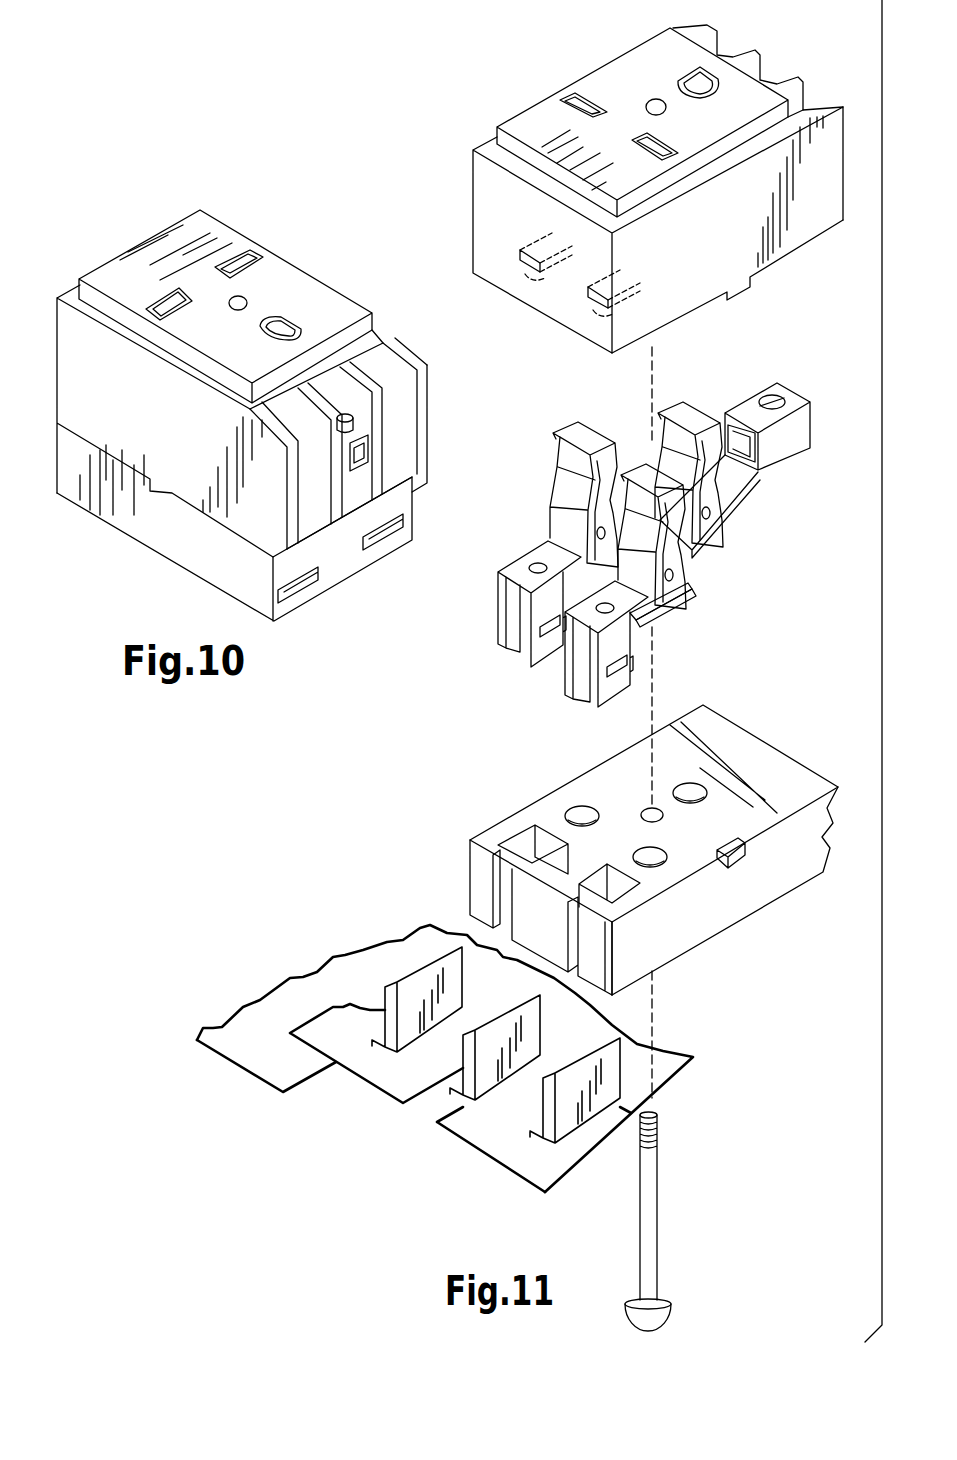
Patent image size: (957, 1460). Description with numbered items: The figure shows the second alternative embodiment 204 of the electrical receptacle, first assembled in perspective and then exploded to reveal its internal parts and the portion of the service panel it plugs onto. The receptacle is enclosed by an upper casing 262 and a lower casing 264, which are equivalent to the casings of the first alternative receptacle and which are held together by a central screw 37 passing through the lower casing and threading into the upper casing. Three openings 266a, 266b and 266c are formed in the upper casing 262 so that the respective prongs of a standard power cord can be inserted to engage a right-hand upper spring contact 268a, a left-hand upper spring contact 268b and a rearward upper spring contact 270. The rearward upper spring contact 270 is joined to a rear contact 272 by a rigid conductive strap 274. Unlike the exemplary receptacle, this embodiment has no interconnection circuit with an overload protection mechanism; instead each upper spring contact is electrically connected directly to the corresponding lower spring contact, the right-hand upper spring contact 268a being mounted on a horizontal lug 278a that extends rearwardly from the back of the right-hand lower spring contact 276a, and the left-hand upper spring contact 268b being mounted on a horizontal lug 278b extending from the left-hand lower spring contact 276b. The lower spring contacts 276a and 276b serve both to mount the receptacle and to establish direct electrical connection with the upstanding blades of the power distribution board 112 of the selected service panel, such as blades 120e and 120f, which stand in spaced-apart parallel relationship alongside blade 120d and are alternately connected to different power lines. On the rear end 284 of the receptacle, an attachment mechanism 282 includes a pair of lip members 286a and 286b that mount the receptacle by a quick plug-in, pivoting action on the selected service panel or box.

In FIG. 10, the second alternative embodiment of the receptacle 204 is at (297, 244).
In FIG. 11, the second alternative embodiment of the receptacle 204 is at (765, 917).
In FIG. 10, the attachment mechanism 282 is at (368, 576).
In FIG. 10, the rear end 284 is at (408, 502).
In FIG. 10, the lip member 286a is at (300, 590).
In FIG. 10, the lip member 286b is at (387, 539).
In FIG. 11, the upper casing 262 is at (843, 143).
In FIG. 11, the lower casing 264 is at (838, 800).
In FIG. 11, the opening 266a is at (588, 110).
In FIG. 11, the opening 266b is at (652, 152).
In FIG. 11, the opening 266c is at (688, 79).
In FIG. 11, the right-hand upper spring contact 268a is at (558, 460).
In FIG. 11, the left-hand upper spring contact 268b is at (690, 572).
In FIG. 11, the rearward upper spring contact 270 is at (703, 400).
In FIG. 11, the rear contact 272 is at (803, 395).
In FIG. 11, the rigid conductive strap 274 is at (738, 510).
In FIG. 11, the right-hand lower spring contact 276a is at (505, 612).
In FIG. 11, the left-hand lower spring contact 276b is at (570, 663).
In FIG. 11, the horizontal lug 278a is at (650, 627).
In FIG. 11, the horizontal lug 278b is at (673, 607).
In FIG. 11, the power distribution board 112 is at (693, 1058).
In FIG. 11, the upstanding blade 120d is at (398, 970).
In FIG. 11, the upstanding blade 120e is at (466, 1054).
In FIG. 11, the upstanding blade 120f is at (540, 1106).
In FIG. 11, the central screw 37 is at (660, 1201).